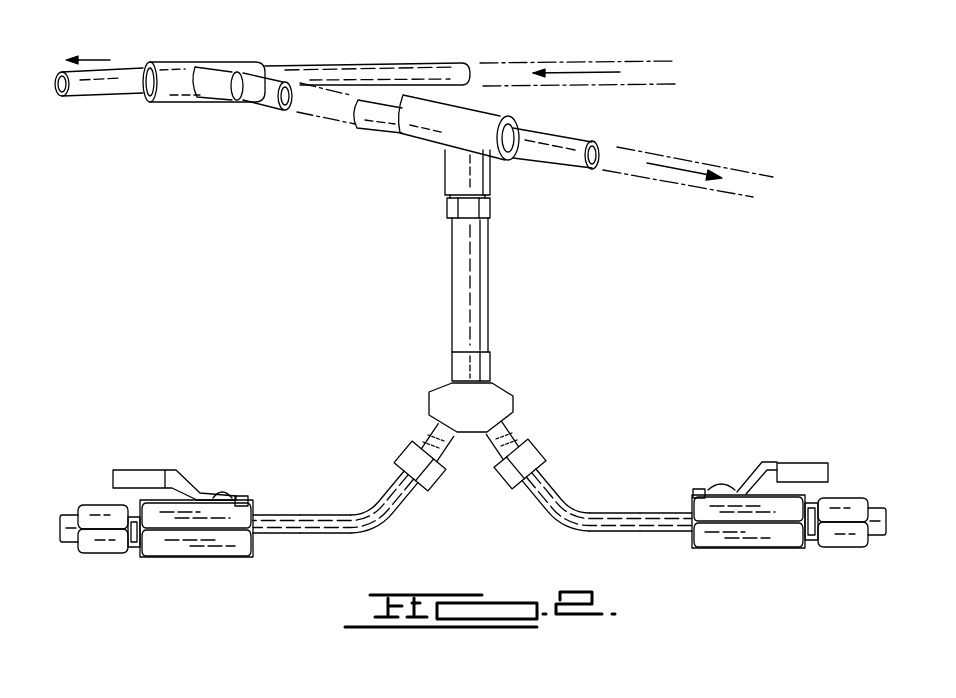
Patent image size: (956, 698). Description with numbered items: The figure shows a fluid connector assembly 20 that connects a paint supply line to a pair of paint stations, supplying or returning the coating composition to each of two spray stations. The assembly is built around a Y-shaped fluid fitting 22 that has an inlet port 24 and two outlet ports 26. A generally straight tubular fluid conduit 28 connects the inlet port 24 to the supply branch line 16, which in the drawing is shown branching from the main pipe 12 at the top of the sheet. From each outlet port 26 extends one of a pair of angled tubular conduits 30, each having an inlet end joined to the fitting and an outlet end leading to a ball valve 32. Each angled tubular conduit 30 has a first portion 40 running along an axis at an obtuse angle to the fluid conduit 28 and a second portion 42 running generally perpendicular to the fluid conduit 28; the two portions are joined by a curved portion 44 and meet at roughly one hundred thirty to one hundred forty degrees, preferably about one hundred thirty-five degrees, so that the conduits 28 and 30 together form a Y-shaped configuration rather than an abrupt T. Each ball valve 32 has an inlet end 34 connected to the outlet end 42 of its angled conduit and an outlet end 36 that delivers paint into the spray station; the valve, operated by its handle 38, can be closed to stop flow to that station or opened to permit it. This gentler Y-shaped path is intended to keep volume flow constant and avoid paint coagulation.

The supply pipe 12 is at (372, 76).
The supply branch line 16 is at (575, 146).
The fluid connector assembly 20 is at (403, 383).
The Y-shaped fluid fitting 22 is at (514, 406).
The inlet port 24 is at (492, 366).
The outlet ports 26 is at (398, 452).
The tubular fluid conduit 28 is at (478, 240).
The angled tubular conduits 30 is at (320, 516).
The ball valves 32 is at (246, 496).
The inlet end 34 is at (240, 550).
The outlet end 36 is at (134, 548).
The handle 38 is at (805, 476).
The first portions 40 is at (404, 510).
The second portions 42 is at (276, 534).
The curved portion 44 is at (358, 530).